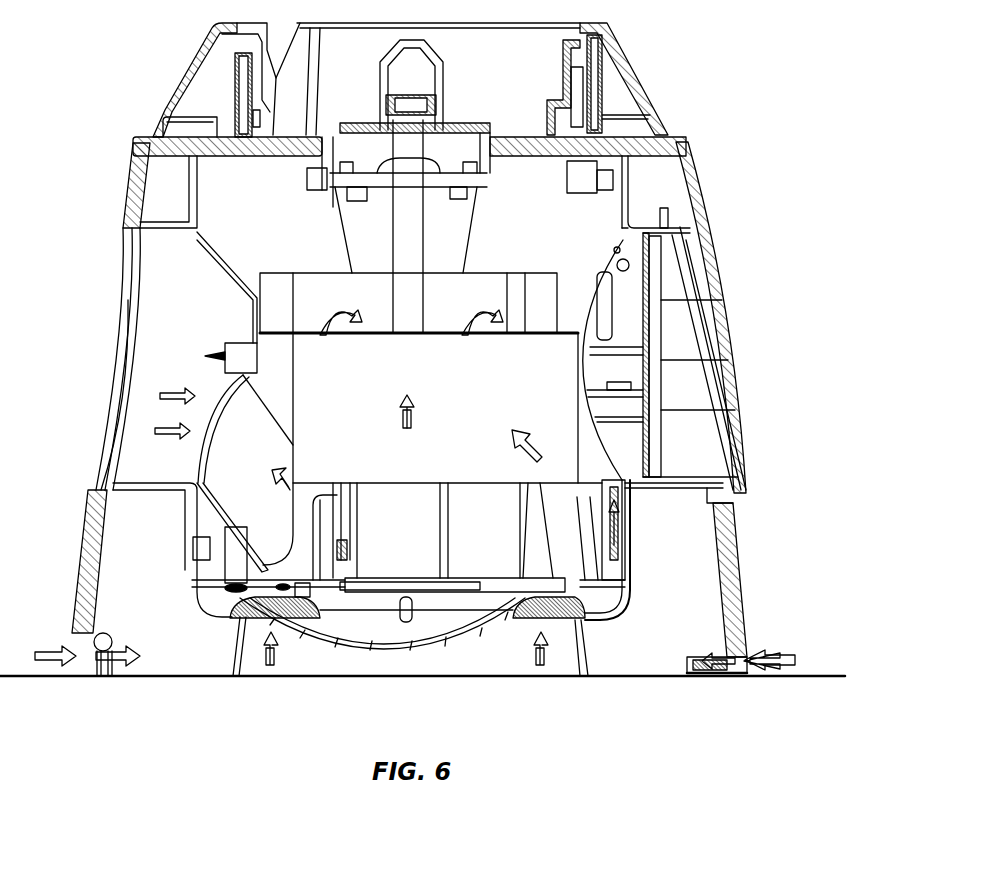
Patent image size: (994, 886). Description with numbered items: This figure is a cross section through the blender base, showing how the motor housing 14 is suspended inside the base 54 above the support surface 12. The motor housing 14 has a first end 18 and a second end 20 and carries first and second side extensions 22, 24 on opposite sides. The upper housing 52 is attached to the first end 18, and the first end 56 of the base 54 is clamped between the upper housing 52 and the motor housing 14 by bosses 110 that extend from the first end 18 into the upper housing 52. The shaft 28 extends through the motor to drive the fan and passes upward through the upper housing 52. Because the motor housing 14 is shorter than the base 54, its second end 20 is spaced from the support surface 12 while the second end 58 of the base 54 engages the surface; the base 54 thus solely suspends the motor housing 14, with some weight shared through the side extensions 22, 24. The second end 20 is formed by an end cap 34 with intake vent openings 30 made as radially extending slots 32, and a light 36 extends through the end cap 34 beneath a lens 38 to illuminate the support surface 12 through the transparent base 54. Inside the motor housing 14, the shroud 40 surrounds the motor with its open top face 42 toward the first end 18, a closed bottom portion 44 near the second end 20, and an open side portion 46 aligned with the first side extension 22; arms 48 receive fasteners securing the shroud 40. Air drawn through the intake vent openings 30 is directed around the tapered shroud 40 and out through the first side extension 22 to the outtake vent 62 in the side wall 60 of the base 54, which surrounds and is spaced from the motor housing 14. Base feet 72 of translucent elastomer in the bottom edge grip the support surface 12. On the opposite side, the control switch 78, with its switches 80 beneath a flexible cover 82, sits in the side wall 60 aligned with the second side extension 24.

The support surface 12 is at (805, 676).
The motor housing 14 is at (640, 195).
The first end 18 is at (193, 195).
The second end 20 is at (195, 525).
The first side extension 22 is at (160, 272).
The second side extension 24 is at (665, 283).
The shaft 28 is at (420, 150).
The intake vent openings 30 is at (238, 645).
The radially extending slots 32 is at (282, 622).
The end cap 34 is at (212, 603).
The light 36 is at (400, 615).
The lens 38 is at (443, 640).
The shroud 40 is at (507, 402).
The open top face 42 is at (565, 325).
The closed bottom portion 44 is at (455, 578).
The open side portion 46 is at (215, 478).
The arms 48 is at (625, 567).
The upper housing 52 is at (622, 75).
The base 54 is at (130, 208).
The first end 56 is at (665, 165).
The second end 58 is at (598, 660).
The side wall 60 is at (735, 580).
The outtake vent 62 is at (118, 360).
The base feet 72 is at (680, 675).
The control switch 78 is at (733, 360).
The switches 80 is at (720, 418).
The flexible cover 82 is at (712, 297).
The bosses 110 is at (592, 192).